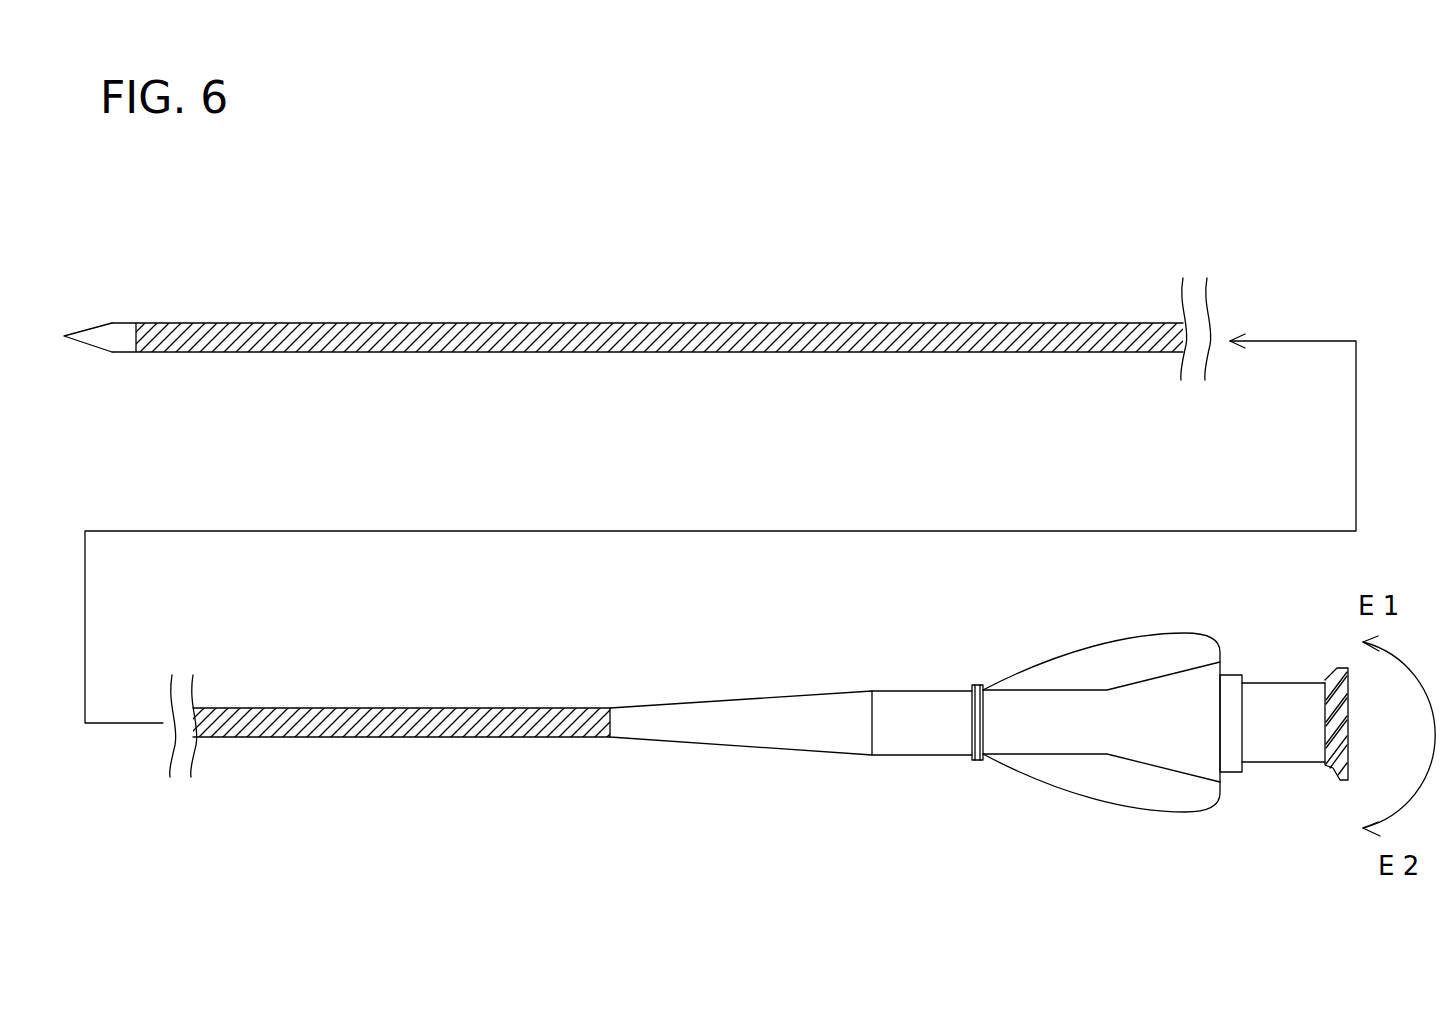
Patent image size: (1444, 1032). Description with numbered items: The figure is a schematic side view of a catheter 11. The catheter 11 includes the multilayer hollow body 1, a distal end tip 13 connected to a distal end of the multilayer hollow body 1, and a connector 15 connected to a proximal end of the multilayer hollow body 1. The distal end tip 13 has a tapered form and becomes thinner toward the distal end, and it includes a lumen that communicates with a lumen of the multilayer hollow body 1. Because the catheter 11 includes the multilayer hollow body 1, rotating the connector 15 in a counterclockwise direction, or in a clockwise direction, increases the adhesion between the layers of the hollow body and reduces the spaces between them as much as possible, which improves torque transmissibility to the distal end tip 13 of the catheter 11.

The multilayer hollow body 1 is at (840, 292).
The catheter 11 is at (679, 686).
The distal end tip 13 is at (110, 343).
The connector 15 is at (910, 707).